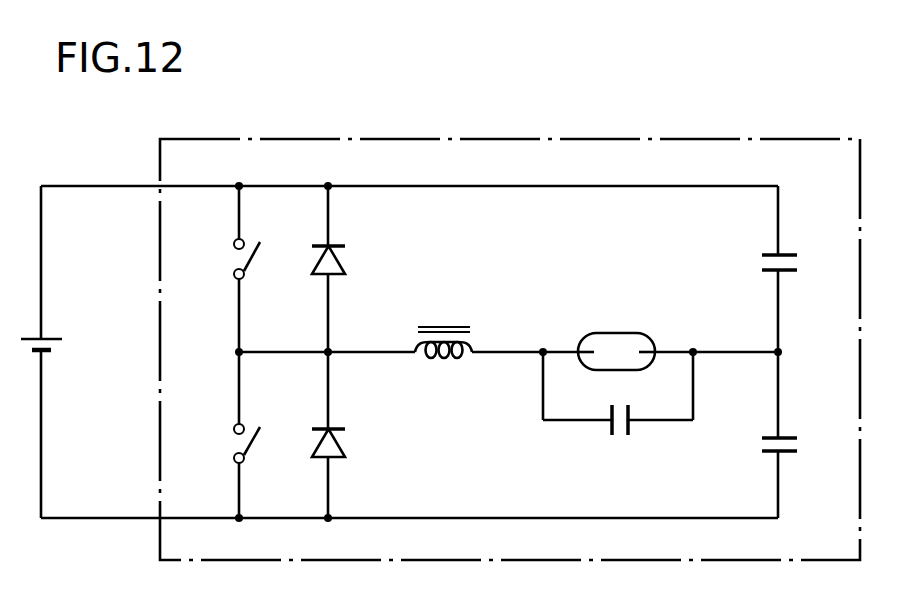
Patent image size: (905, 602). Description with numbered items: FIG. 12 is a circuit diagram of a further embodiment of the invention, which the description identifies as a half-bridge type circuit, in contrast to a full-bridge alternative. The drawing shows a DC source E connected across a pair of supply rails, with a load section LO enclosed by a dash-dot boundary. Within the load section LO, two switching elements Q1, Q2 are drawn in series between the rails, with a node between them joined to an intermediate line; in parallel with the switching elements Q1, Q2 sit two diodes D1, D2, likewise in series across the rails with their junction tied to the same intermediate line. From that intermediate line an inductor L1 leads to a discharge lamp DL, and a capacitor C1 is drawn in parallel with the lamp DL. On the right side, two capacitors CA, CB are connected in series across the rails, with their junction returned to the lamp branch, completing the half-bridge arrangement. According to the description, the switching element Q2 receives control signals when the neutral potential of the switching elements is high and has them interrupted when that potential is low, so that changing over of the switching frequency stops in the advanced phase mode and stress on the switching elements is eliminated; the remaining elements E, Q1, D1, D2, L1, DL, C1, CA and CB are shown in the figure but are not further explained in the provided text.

The load circuit / ballast output section LO is at (565, 139).
The DC power source E is at (54, 346).
The first switching element Q1 is at (221, 259).
The switching element Q2 is at (221, 443).
The first diode D1 is at (354, 259).
The second diode D2 is at (354, 442).
The inductor L1 is at (443, 322).
The discharge lamp DL is at (616, 331).
The resonance capacitor C1 is at (618, 416).
The first DC-cut capacitor CA is at (803, 261).
The second DC-cut capacitor CB is at (802, 449).